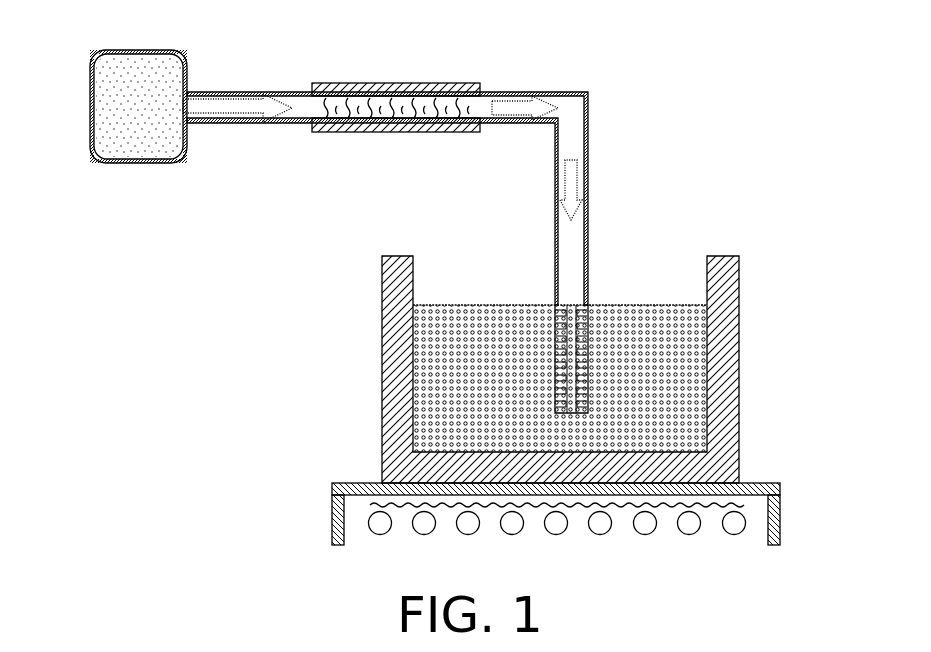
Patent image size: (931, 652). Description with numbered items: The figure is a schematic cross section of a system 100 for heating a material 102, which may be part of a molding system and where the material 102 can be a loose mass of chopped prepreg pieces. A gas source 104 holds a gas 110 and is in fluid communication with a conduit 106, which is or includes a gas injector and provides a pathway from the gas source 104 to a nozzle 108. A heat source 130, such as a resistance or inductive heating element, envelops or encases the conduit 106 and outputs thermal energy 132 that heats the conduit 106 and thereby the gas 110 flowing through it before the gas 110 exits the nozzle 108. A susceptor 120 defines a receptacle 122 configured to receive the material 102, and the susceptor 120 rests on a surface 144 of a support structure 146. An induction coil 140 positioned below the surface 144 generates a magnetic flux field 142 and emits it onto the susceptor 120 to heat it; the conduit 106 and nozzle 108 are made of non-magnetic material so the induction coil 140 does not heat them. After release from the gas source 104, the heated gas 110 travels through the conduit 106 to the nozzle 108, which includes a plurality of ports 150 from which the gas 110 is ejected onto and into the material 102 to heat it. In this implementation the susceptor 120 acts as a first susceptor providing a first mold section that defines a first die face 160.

The system 100 is at (620, 90).
The material 102 is at (676, 310).
The gas source 104 is at (92, 68).
The conduit 106 is at (272, 91).
The nozzle 108 is at (515, 418).
The gas 110 is at (110, 133).
The susceptor 120 is at (382, 311).
The receptacle 122 is at (662, 232).
The heat source 130 is at (395, 83).
The thermal energy 132 is at (448, 105).
The induction coil 140 is at (645, 532).
The magnetic flux field 142 is at (747, 504).
The surface 144 is at (346, 478).
The support structure 146 is at (781, 507).
The ports 150 is at (593, 330).
The first die face 160 is at (440, 445).